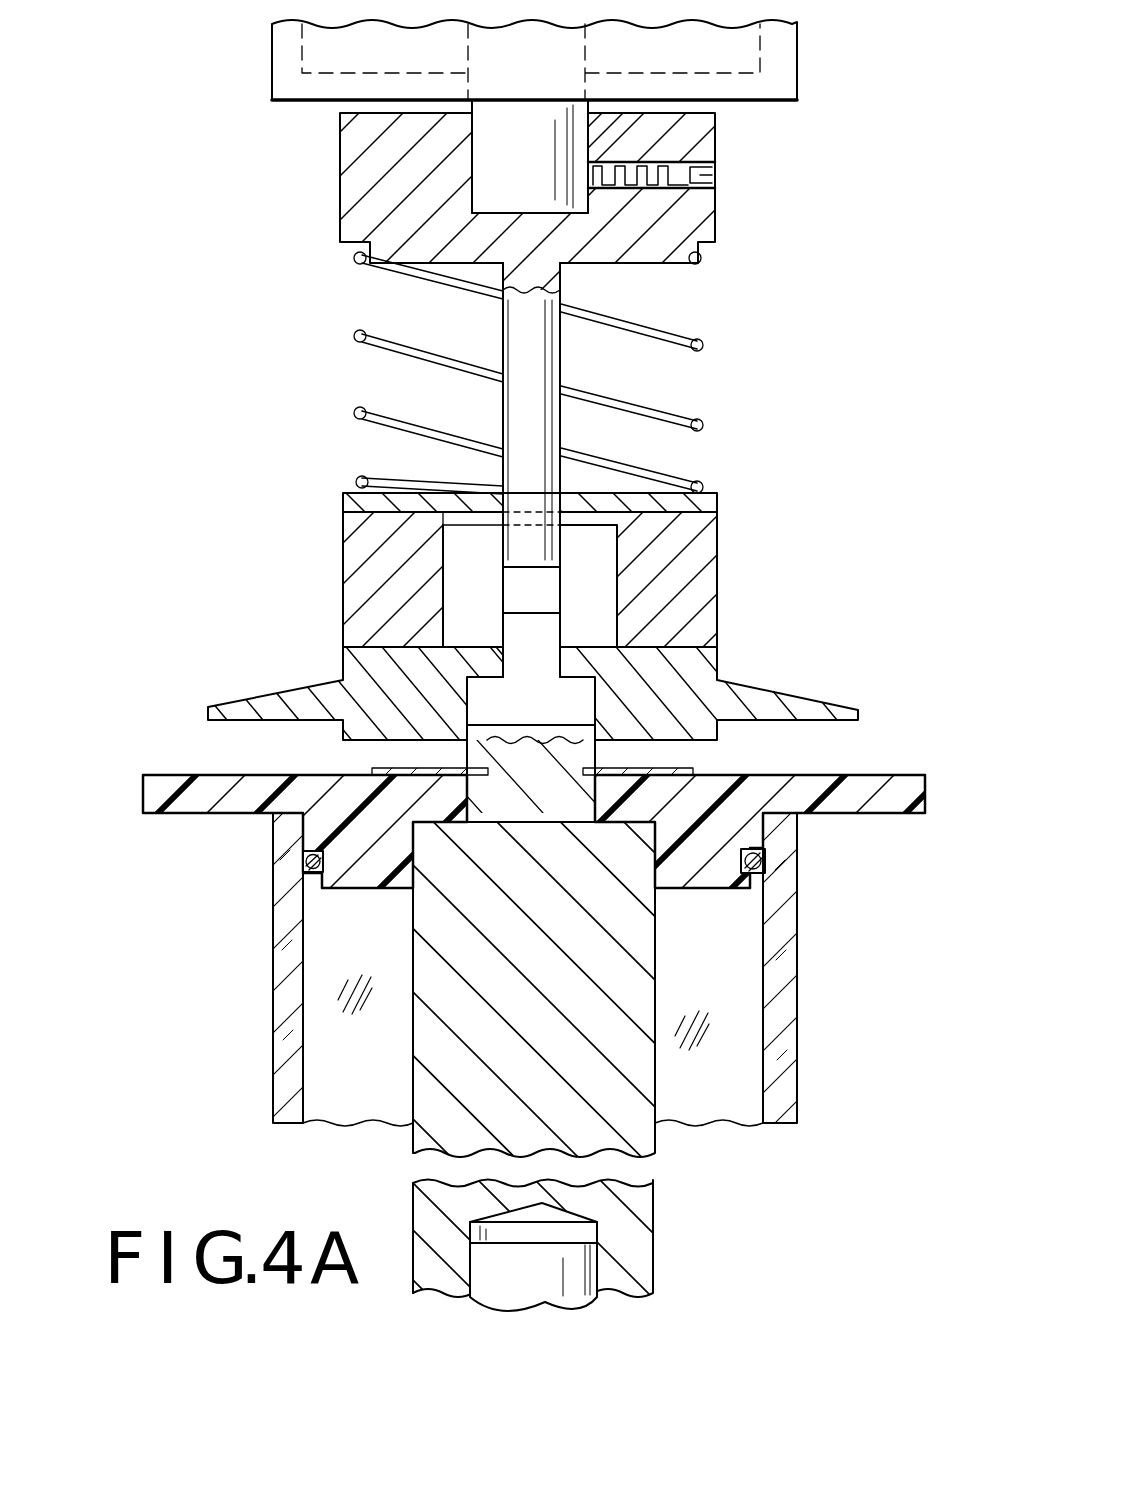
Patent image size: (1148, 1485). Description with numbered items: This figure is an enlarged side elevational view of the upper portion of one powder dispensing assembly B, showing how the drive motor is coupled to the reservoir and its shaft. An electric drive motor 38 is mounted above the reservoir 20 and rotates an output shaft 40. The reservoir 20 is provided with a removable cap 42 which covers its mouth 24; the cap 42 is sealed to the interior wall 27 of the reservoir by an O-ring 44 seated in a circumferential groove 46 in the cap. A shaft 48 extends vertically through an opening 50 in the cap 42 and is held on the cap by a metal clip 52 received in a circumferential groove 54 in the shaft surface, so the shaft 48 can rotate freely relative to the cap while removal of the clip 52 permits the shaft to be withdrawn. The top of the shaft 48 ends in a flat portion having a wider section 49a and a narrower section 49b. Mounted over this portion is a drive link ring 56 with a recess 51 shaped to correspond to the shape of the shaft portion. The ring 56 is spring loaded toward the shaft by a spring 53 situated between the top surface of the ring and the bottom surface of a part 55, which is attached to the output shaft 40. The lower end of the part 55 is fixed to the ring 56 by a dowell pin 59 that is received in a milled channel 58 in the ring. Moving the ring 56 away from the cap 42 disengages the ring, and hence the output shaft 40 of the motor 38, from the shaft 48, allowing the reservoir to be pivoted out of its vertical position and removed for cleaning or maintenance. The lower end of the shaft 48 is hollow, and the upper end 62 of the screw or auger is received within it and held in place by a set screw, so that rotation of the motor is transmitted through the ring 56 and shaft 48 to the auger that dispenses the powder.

The reservoir 20 is at (815, 1060).
The mouth 24 is at (318, 820).
The interior wall 27 is at (743, 941).
The electric drive motor 38 is at (772, 42).
The output shaft 40 is at (500, 155).
The removable cap 42 is at (872, 790).
The O-ring 44 is at (760, 870).
The circumferential groove 46 is at (757, 833).
The shaft 48 is at (452, 988).
The wider section 49a is at (497, 702).
The narrower section 49b is at (533, 650).
The opening 50 is at (487, 832).
The recess 51 is at (720, 643).
The metal clip 52 is at (655, 766).
The spring 53 is at (700, 486).
The circumferential groove 54 is at (480, 748).
The part 55 is at (683, 130).
The drive link ring 56 is at (718, 546).
The milled channel 58 is at (468, 590).
The dowell pin 59 is at (695, 171).
The upper end 62 is at (545, 1277).
The powder dispensing assembly B is at (745, 608).